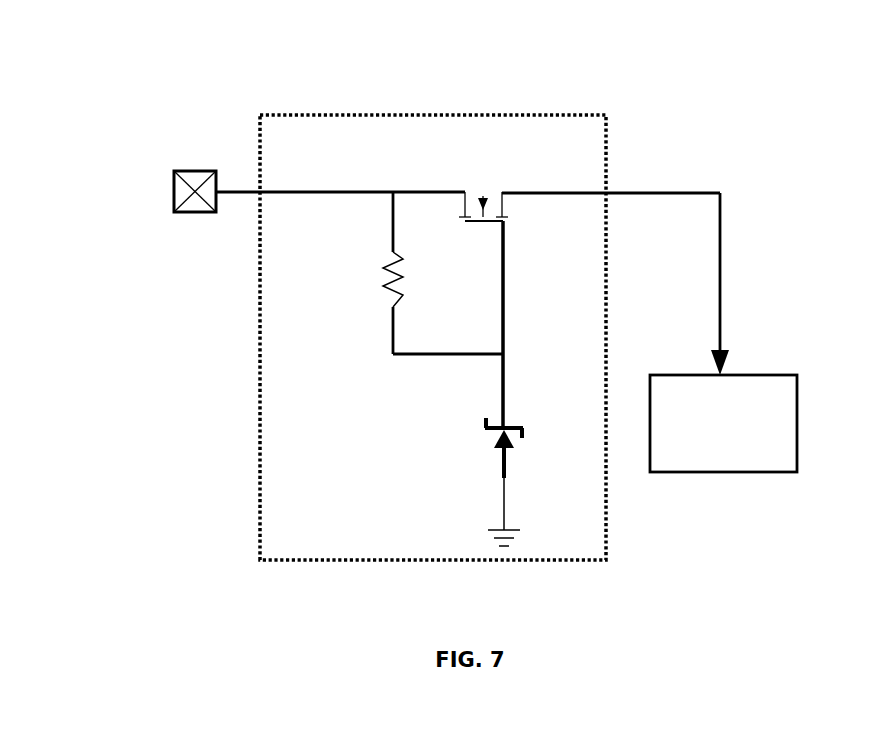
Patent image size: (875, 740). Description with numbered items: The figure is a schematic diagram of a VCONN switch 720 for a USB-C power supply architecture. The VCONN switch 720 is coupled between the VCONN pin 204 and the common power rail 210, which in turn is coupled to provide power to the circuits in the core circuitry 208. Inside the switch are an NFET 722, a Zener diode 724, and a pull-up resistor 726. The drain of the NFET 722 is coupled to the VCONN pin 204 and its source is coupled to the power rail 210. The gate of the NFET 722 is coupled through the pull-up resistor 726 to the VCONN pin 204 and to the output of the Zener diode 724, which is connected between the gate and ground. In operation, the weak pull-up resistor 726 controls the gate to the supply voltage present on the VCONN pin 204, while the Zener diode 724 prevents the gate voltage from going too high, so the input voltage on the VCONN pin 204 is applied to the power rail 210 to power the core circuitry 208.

The VCONN pin 204 is at (181, 170).
The VCONN switch 720 is at (310, 115).
The NFET 722 is at (483, 181).
The Zener diode 724 is at (478, 441).
The pull-up resistor 726 is at (374, 281).
The common power rail 210 is at (722, 227).
The core circuitry 208 is at (797, 428).